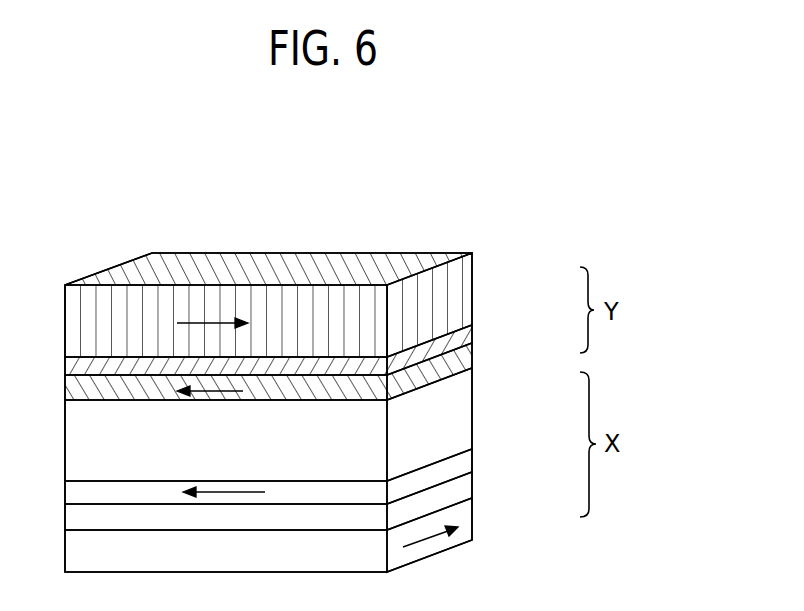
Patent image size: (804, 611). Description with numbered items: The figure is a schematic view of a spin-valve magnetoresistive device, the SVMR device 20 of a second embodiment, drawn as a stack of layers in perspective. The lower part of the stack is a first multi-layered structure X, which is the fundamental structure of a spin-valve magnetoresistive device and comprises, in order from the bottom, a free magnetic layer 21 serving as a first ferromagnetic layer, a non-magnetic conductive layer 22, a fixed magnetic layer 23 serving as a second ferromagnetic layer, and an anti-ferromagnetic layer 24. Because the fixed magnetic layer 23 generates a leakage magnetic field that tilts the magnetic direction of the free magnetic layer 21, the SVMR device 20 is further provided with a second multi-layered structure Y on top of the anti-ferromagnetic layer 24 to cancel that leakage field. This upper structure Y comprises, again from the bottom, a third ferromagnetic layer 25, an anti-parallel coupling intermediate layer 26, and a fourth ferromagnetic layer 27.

The SVMR device 20 is at (495, 198).
The free magnetic layer 21 is at (462, 512).
The non-magnetic conductive layer 22 is at (462, 483).
The fixed magnetic layer 23 is at (462, 458).
The anti-ferromagnetic layer 24 is at (462, 401).
The third ferromagnetic layer 25 is at (473, 353).
The anti-parallel coupling intermediate layer 26 is at (473, 336).
The fourth ferromagnetic layer 27 is at (473, 290).